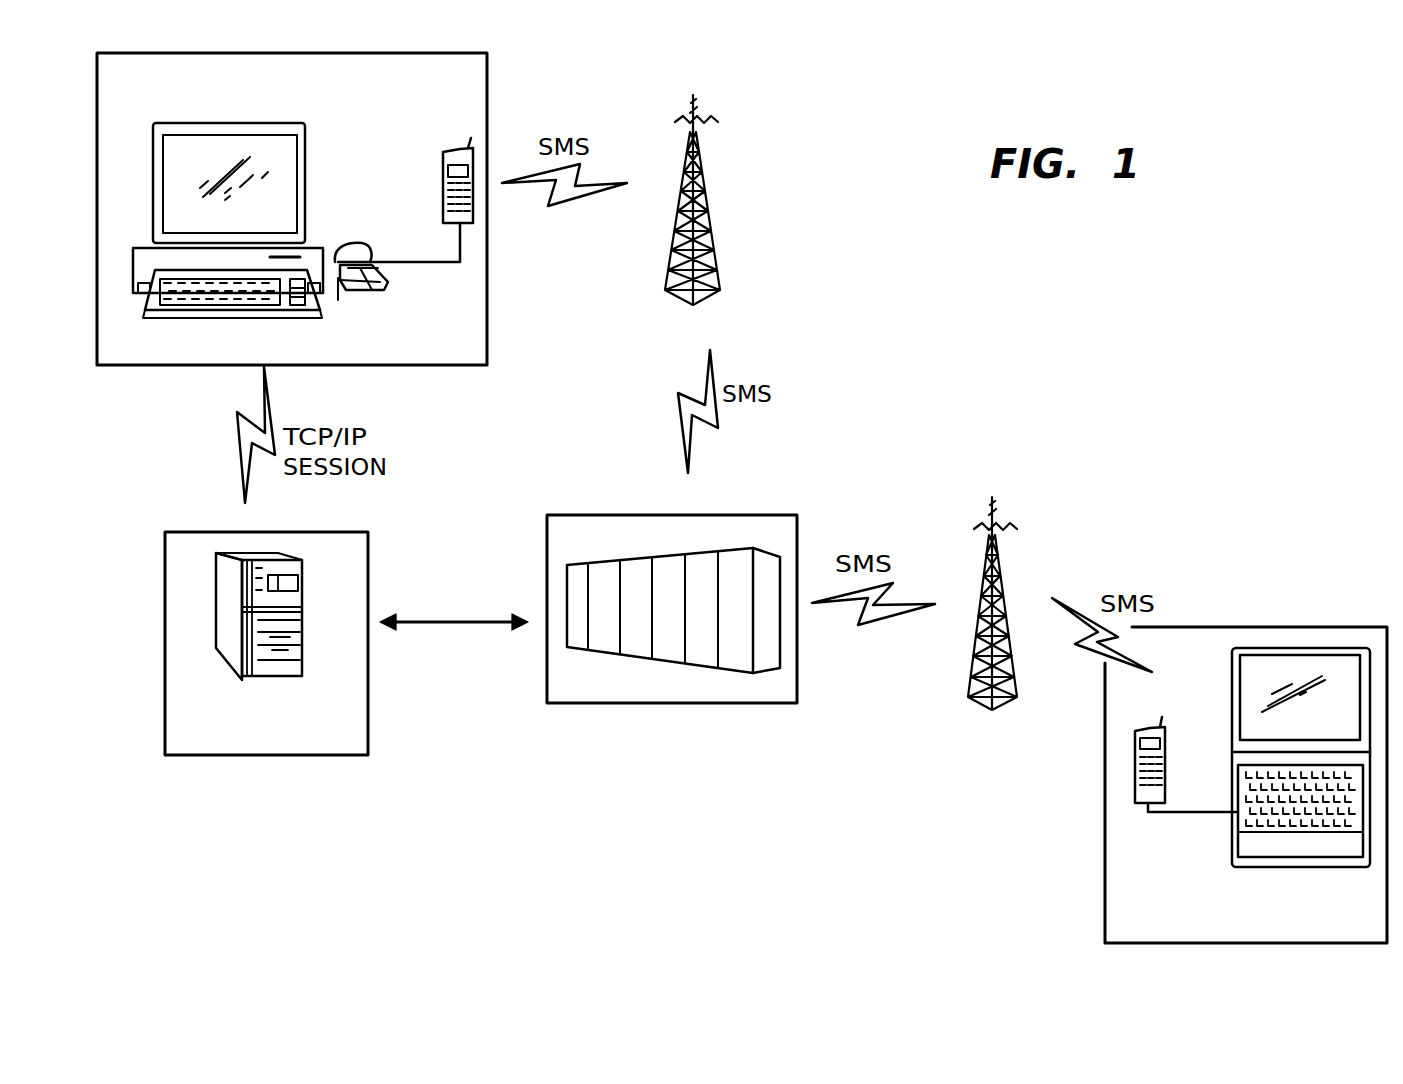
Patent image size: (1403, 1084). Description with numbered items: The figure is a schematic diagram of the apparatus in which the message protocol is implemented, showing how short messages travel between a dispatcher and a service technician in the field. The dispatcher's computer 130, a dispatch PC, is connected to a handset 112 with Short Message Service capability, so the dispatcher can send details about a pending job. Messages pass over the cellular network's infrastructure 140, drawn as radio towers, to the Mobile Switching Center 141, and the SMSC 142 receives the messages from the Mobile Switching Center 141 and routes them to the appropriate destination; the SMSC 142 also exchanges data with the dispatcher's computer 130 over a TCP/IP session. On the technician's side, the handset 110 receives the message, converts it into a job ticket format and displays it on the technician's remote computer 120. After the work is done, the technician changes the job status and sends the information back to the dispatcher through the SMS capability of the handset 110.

The service technician's handset 110 is at (1123, 797).
The dispatcher's handset 112 is at (394, 144).
The service technician's computer 120 is at (1133, 785).
The dispatcher's computer 130 is at (333, 203).
The cellular network infrastructure 140 is at (700, 170).
The Mobile Switching Center 141 is at (755, 705).
The SMSC 142 is at (368, 732).